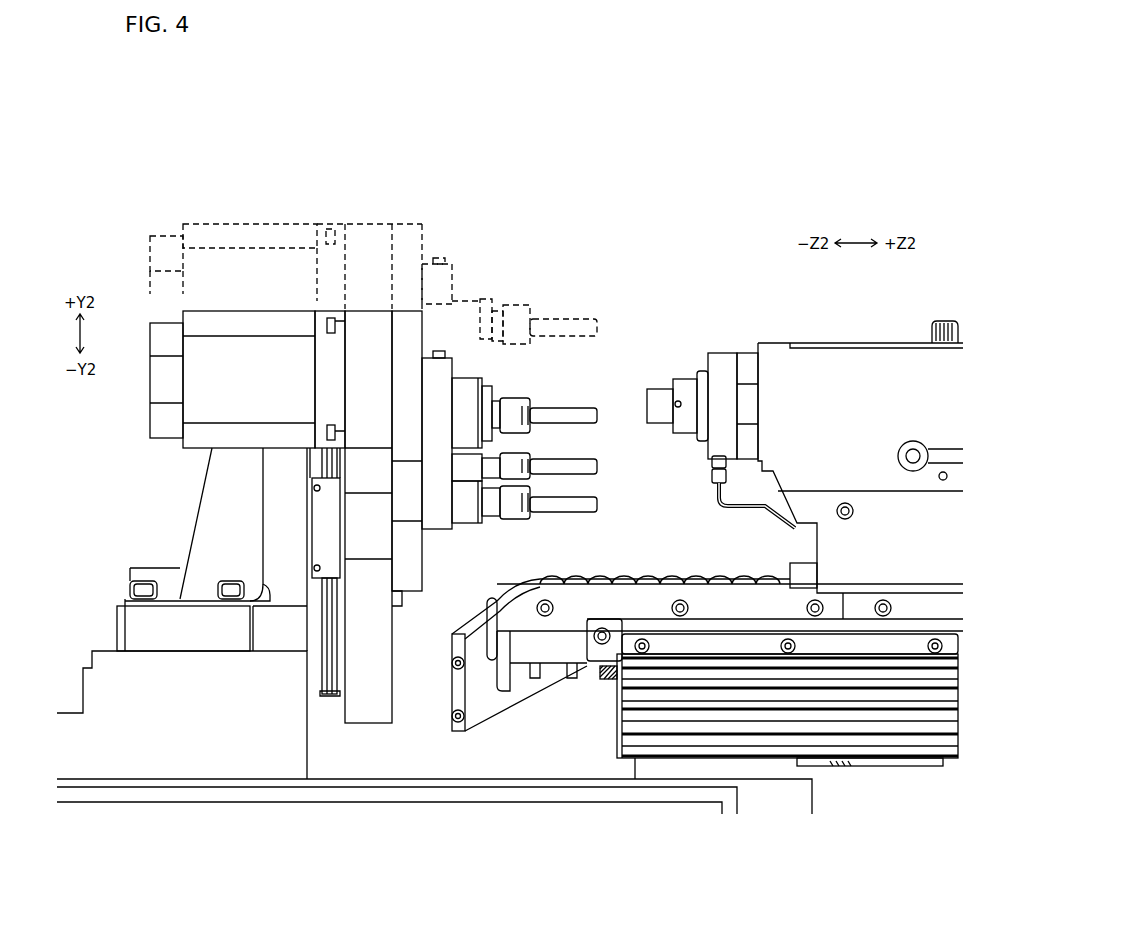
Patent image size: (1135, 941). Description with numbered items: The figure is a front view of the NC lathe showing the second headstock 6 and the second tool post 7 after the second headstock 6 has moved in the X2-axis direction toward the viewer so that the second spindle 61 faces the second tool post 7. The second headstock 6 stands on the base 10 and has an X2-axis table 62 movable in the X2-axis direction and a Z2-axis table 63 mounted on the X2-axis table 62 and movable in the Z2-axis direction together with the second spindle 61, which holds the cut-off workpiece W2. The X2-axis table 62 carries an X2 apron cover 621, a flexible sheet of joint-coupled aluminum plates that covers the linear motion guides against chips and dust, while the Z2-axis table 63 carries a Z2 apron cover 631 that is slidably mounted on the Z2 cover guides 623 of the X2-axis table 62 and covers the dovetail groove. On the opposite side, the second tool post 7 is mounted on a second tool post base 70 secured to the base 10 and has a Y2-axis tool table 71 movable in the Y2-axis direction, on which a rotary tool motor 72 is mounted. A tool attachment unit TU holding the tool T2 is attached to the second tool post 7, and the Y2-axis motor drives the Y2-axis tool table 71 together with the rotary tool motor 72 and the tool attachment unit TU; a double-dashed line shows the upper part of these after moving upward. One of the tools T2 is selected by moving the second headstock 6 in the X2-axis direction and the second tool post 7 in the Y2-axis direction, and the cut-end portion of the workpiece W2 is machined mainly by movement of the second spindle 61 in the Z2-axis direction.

The second tool post 7 is at (145, 305).
The rotary tool motor 72 is at (157, 422).
The Y2-axis tool table 71 is at (385, 648).
The second tool post base 70 is at (128, 627).
The base 10 is at (812, 806).
The tool attachment unit TU is at (512, 400).
The tool T2 is at (575, 410).
The Z2 apron cover 631 is at (645, 573).
The Z2-axis table 63 is at (820, 350).
The second headstock 6 is at (912, 326).
The second spindle 61 is at (687, 385).
The cut-off workpiece W2 is at (657, 390).
The Z2 cover guide 623 is at (455, 698).
The X2-axis table 62 is at (598, 655).
The X2 apron cover 621 is at (948, 762).